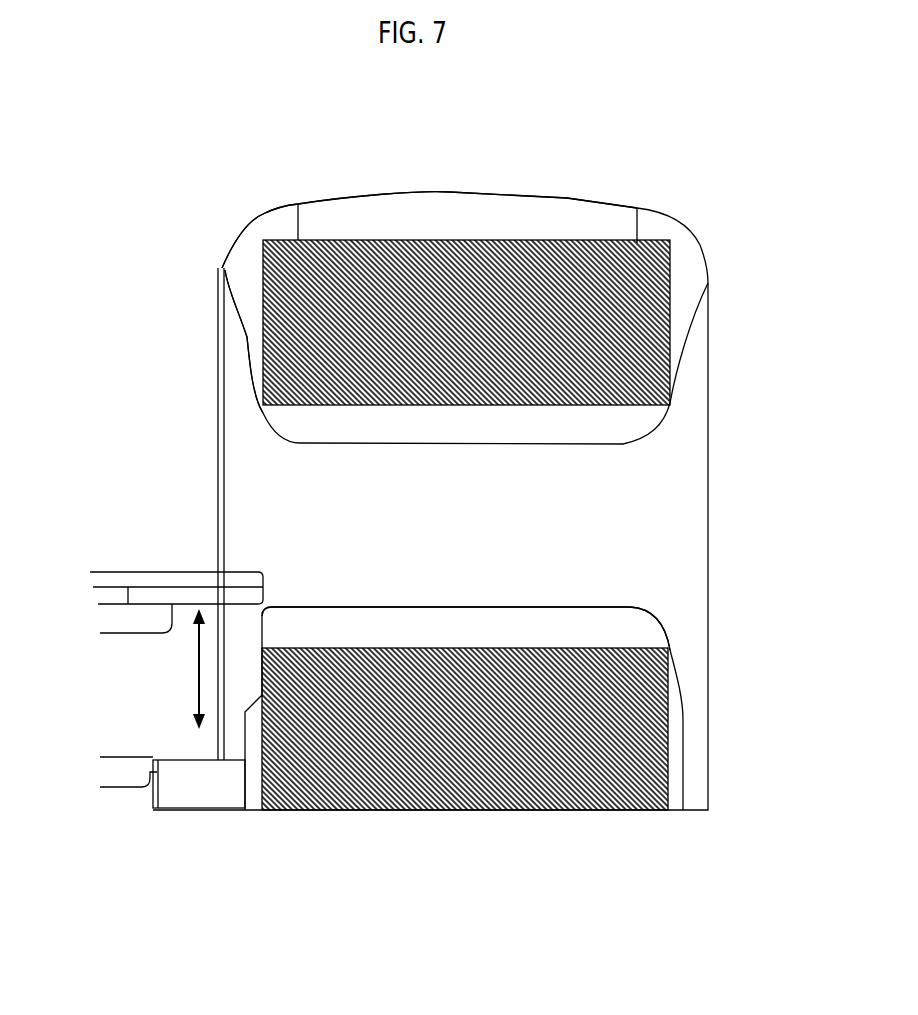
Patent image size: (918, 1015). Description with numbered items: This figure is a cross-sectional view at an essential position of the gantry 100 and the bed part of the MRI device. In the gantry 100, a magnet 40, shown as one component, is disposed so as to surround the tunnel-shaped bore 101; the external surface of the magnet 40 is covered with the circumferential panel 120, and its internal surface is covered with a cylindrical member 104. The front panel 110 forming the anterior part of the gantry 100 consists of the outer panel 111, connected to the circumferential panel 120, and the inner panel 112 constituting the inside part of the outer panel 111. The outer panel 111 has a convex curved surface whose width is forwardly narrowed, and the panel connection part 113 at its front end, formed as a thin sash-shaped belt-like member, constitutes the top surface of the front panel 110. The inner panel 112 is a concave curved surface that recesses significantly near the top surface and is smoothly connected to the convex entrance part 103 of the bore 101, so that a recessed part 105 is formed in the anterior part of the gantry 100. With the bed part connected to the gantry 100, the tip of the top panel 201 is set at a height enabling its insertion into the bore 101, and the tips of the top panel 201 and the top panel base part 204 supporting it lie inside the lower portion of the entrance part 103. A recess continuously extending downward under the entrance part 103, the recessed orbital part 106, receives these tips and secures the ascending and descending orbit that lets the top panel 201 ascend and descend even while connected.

The gantry 100 is at (265, 137).
The bore 101 is at (512, 532).
The entrance part 103 is at (262, 413).
The cylindrical member 104 is at (483, 610).
The recessed part 105 is at (236, 541).
The recessed orbital part 106 is at (250, 682).
The front panel 110 is at (203, 241).
The outer panel 111 is at (247, 233).
The inner panel 112 is at (248, 342).
The panel connection part 113 is at (222, 280).
The circumferential panel 120 is at (567, 198).
The magnet 40 is at (415, 812).
The top panel 201 is at (172, 578).
The top panel base part 204 is at (178, 600).